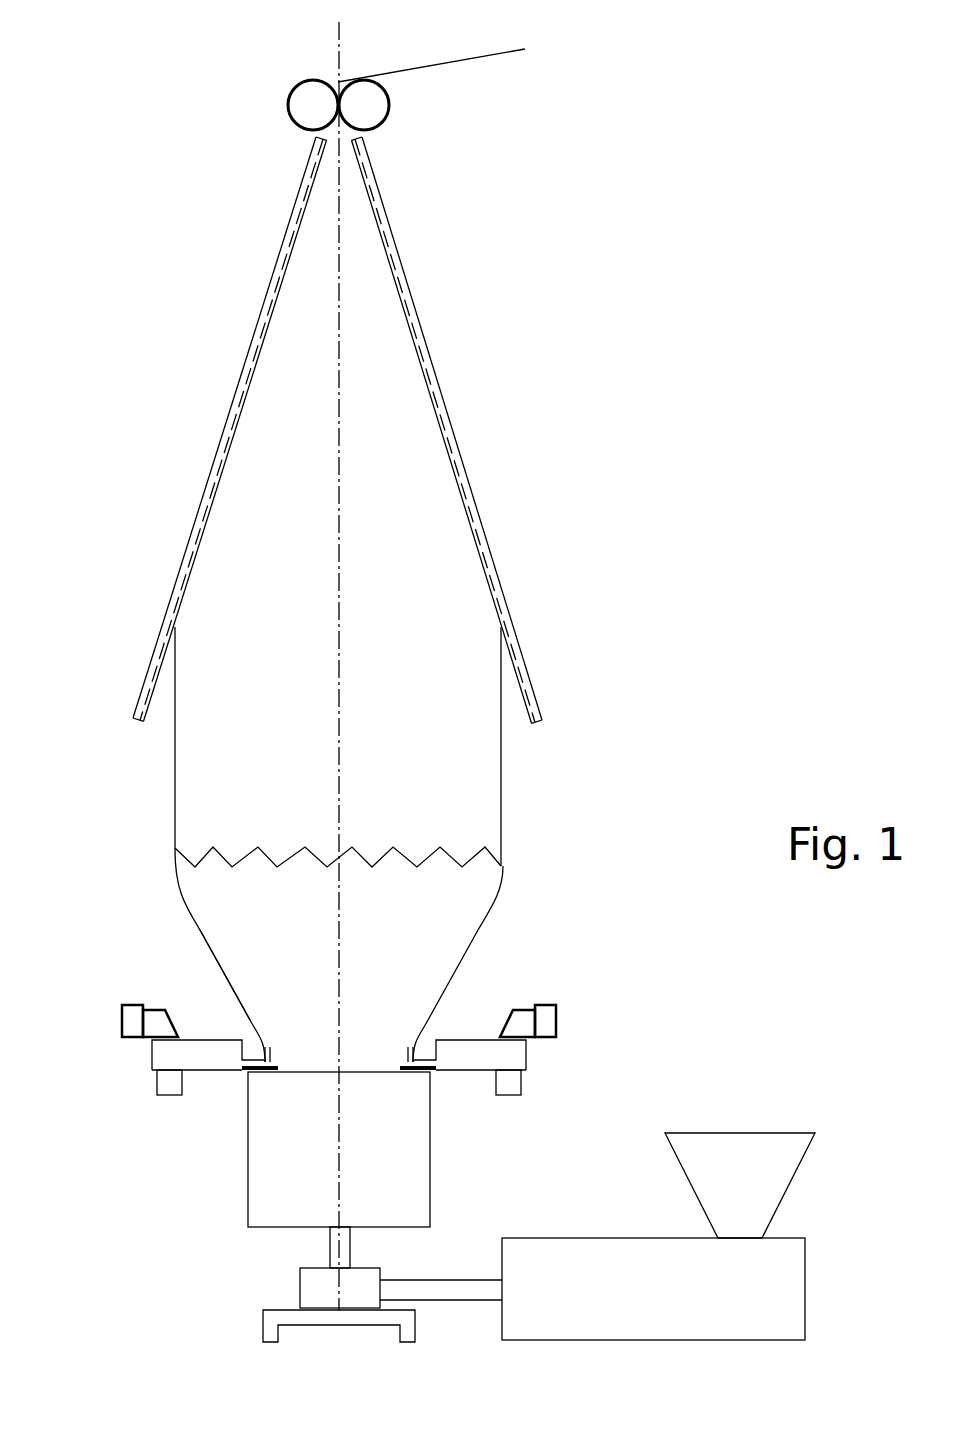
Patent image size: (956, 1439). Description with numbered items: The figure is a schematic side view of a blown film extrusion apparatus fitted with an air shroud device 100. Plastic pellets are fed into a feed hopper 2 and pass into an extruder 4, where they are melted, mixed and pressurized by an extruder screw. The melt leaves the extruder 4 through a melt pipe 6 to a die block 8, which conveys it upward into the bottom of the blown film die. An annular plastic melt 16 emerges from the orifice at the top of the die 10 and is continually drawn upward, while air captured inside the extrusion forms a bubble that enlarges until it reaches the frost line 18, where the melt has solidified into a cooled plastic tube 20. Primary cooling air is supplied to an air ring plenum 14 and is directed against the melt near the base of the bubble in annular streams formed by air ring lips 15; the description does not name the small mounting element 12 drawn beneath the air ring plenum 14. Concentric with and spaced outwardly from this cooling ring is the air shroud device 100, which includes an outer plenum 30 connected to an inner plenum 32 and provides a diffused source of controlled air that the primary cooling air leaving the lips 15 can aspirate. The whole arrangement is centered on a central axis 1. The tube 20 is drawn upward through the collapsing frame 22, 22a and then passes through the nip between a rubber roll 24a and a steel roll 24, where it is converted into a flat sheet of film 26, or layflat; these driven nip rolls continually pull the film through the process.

The central axis 1 is at (338, 746).
The feed hopper 2 is at (740, 1168).
The extruder 4 is at (653, 1268).
The melt pipe 6 is at (441, 1331).
The die block 8 is at (314, 1284).
The die 10 is at (311, 1149).
The mounting block 12 is at (285, 1107).
The air ring plenum 14 is at (290, 1066).
The air ring lips 15 is at (266, 1004).
The annular plastic melt 16 is at (259, 972).
The frost line 18 is at (338, 832).
The plastic tube 20 is at (501, 783).
The collapsing frame 22 is at (452, 430).
The collapsing frame 22a is at (221, 429).
The steel roll 24 is at (411, 127).
The rubber roll 24a is at (261, 127).
The flat sheet of film 26 is at (431, 43).
The outer plenum 30 is at (105, 1014).
The inner plenum 32 is at (513, 992).
The air shroud device 100 is at (410, 1023).